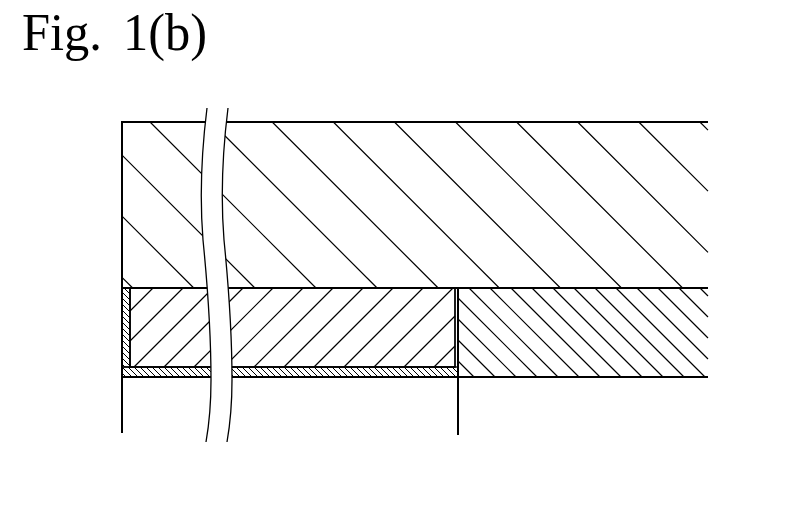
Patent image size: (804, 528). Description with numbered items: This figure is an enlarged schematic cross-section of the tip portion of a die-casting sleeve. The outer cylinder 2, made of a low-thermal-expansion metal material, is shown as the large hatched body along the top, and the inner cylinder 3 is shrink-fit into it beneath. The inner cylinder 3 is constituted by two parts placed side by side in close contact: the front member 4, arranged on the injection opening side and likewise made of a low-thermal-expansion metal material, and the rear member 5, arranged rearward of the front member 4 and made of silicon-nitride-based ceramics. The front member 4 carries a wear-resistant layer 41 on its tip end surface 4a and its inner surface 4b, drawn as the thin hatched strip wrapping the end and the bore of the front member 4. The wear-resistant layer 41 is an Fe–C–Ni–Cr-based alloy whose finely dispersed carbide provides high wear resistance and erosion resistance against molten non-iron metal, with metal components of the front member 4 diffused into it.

The outer cylinder 2 is at (441, 137).
The inner cylinder 3 is at (517, 465).
The front member 4 is at (305, 350).
The wear-resistant layer 41 is at (357, 370).
The tip end surface 4a is at (124, 327).
The inner surface 4b is at (149, 371).
The rear member 5 is at (503, 358).